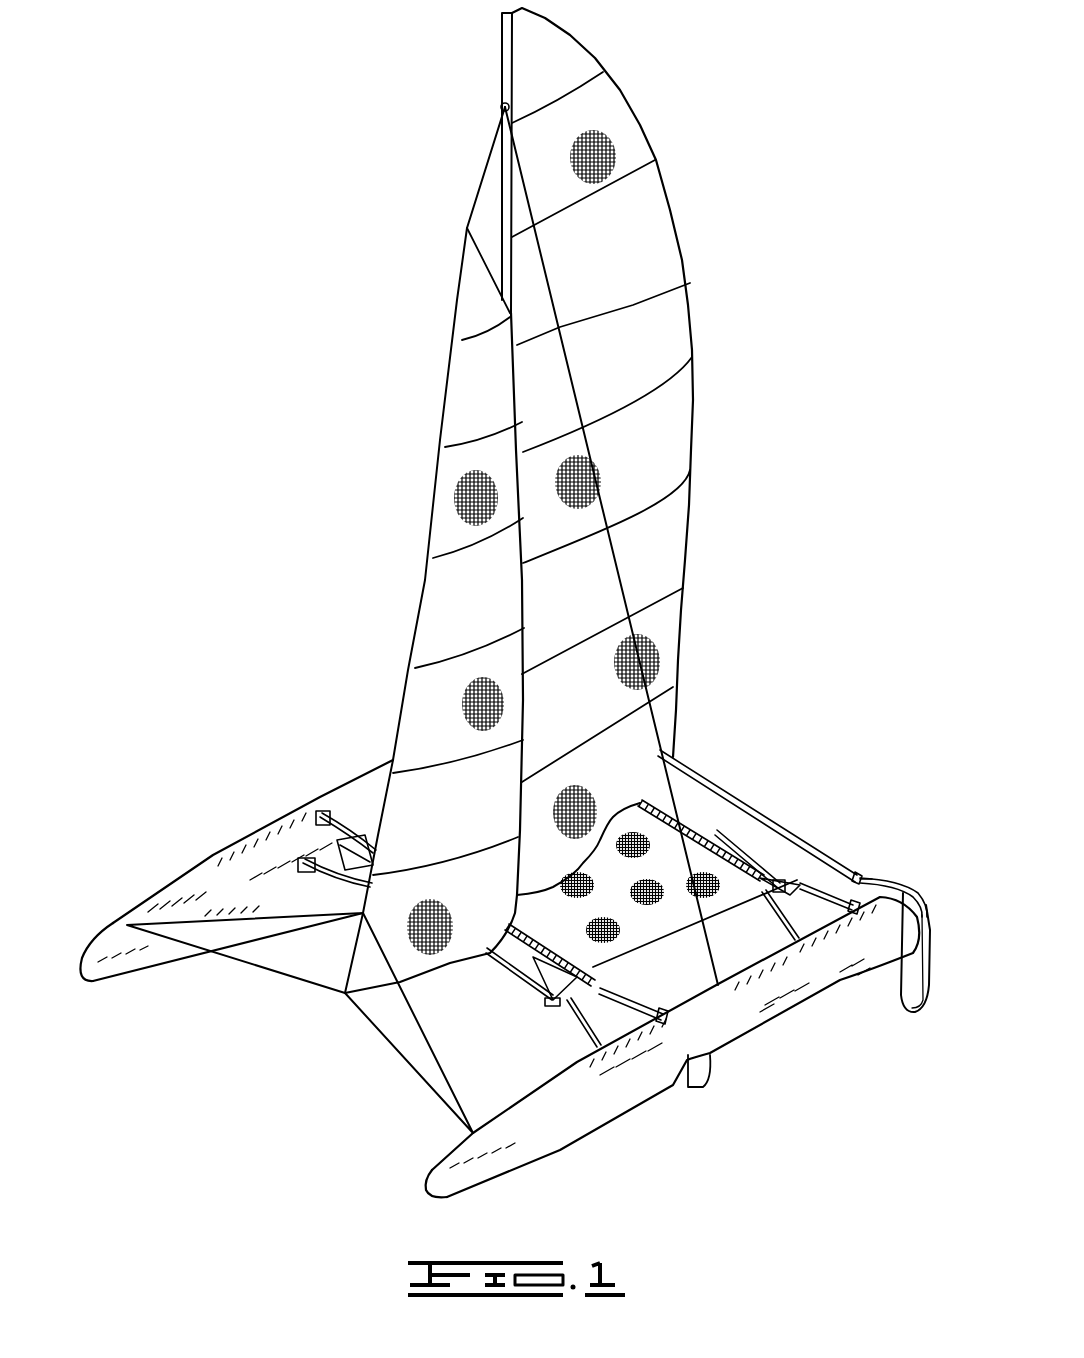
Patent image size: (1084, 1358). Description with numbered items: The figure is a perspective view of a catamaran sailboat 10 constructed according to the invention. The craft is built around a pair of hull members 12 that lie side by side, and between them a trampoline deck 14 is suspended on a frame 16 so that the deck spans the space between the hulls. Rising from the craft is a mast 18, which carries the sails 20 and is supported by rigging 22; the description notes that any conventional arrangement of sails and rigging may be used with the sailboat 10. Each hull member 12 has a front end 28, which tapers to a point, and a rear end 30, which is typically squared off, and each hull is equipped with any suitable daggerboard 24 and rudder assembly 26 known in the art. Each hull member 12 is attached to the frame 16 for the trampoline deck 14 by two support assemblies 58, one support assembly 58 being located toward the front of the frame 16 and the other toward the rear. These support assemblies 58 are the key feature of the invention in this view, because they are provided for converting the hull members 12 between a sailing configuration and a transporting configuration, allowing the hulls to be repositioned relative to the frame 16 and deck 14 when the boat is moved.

The catamaran sailboat 10 is at (328, 486).
The hull member 12 is at (213, 848).
The trampoline deck 14 is at (647, 833).
The frame 16 is at (717, 832).
The mast 18 is at (505, 47).
The sails 20 is at (637, 305).
The rigging 22 is at (484, 170).
The daggerboard 24 is at (707, 1073).
The rudder assembly 26 is at (917, 980).
The front end 28 is at (80, 985).
The rear end 30 is at (923, 912).
The support assembly 58 is at (803, 856).